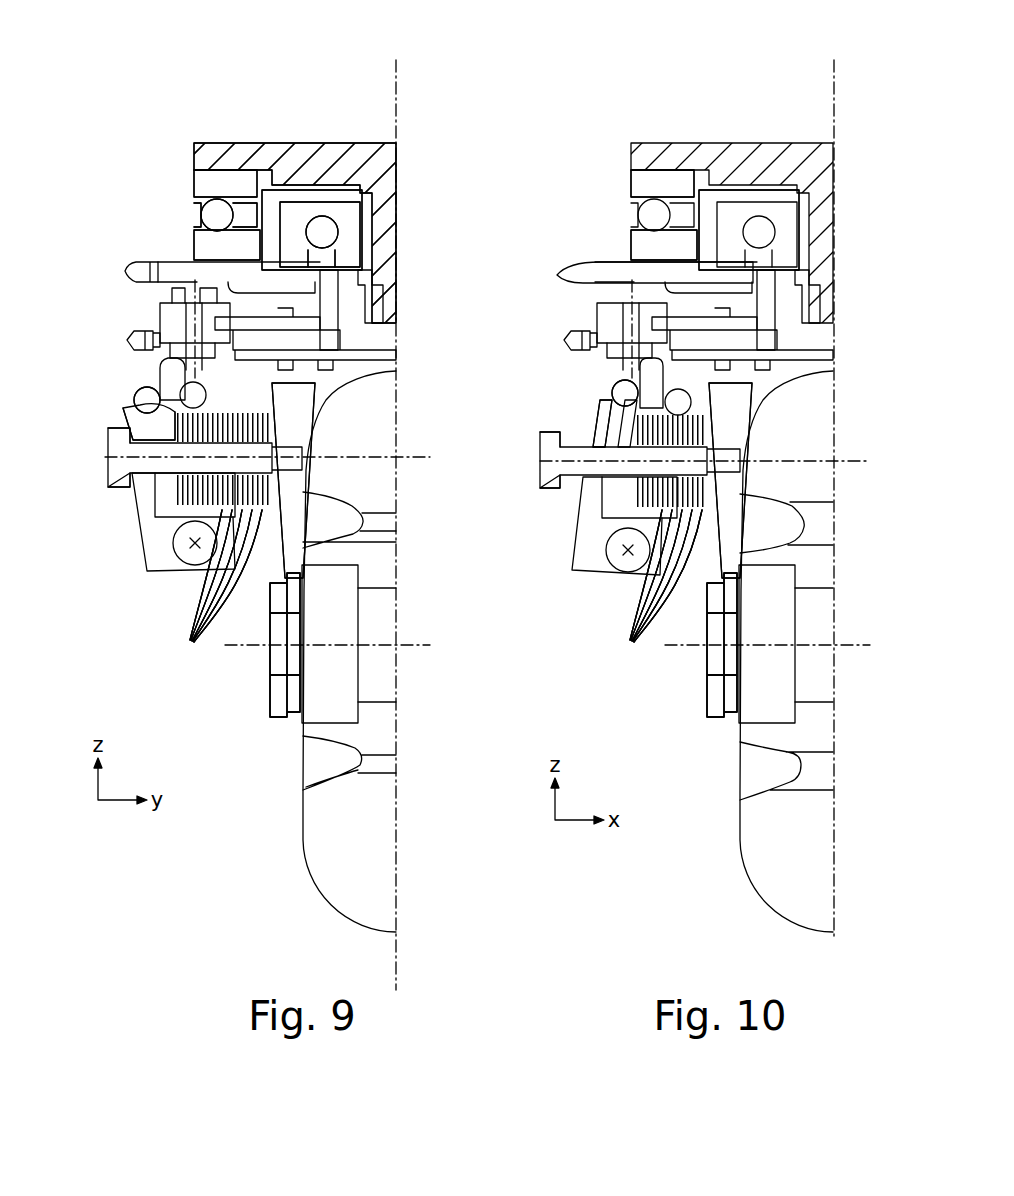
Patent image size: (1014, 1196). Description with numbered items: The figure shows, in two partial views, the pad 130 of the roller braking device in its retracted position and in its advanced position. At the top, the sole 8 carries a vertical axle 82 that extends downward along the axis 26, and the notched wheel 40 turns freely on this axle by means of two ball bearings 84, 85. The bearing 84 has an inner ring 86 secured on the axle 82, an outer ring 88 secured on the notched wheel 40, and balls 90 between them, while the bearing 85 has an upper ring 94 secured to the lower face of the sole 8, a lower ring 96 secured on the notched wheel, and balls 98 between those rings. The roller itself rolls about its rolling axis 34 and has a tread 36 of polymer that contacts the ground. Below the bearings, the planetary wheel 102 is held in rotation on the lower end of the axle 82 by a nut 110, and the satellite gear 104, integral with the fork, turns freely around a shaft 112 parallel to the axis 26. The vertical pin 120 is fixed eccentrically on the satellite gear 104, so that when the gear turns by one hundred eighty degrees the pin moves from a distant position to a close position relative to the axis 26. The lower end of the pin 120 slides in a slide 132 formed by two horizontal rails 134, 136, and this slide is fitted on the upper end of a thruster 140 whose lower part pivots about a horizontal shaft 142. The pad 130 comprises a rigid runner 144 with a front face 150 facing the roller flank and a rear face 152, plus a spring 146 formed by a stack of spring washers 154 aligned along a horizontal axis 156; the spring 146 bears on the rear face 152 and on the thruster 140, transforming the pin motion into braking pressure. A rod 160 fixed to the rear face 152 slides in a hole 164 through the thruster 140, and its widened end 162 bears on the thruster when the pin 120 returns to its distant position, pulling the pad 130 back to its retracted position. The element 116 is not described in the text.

In FIG. 9, the sole 8 is at (361, 138).
In FIG. 9, the axis 26 is at (398, 942).
In FIG. 10, the axis 26 is at (835, 72).
In FIG. 9, the rolling axis 34 is at (407, 645).
In FIG. 10, the rolling axis 34 is at (848, 645).
In FIG. 9, the tread 36 is at (332, 868).
In FIG. 10, the tread 36 is at (772, 868).
In FIG. 9, the notched wheel 40 is at (173, 272).
In FIG. 10, the notched wheel 40 is at (600, 272).
In FIG. 9, the vertical axle 82 is at (382, 205).
In FIG. 9, the ball bearing 84 is at (222, 51).
In FIG. 10, the ball bearing 84 is at (659, 51).
In FIG. 9, the ball bearing 85 is at (103, 125).
In FIG. 10, the ball bearing 85 is at (542, 125).
In FIG. 9, the inner ring 86 is at (348, 210).
In FIG. 10, the inner ring 86 is at (785, 210).
In FIG. 9, the outer ring 88 is at (297, 210).
In FIG. 10, the outer ring 88 is at (734, 210).
In FIG. 9, the balls 90 is at (323, 220).
In FIG. 10, the balls 90 is at (760, 220).
In FIG. 9, the upper ring 94 is at (203, 180).
In FIG. 10, the upper ring 94 is at (640, 180).
In FIG. 9, the lower ring 96 is at (210, 247).
In FIG. 10, the lower ring 96 is at (648, 247).
In FIG. 9, the balls 98 is at (210, 218).
In FIG. 10, the balls 98 is at (648, 218).
In FIG. 9, the planetary wheel 102 is at (332, 333).
In FIG. 10, the planetary wheel 102 is at (770, 333).
In FIG. 9, the satellite gear 104 is at (128, 341).
In FIG. 10, the satellite gear 104 is at (565, 341).
In FIG. 9, the nut 110 is at (376, 306).
In FIG. 10, the nut 110 is at (813, 305).
In FIG. 9, the shaft 112 is at (180, 290).
In FIG. 9, the support 116 is at (322, 382).
In FIG. 10, the support 116 is at (768, 363).
In FIG. 9, the vertical pin 120 is at (172, 379).
In FIG. 10, the vertical pin 120 is at (650, 377).
In FIG. 9, the braking pad 130 is at (233, 711).
In FIG. 10, the braking pad 130 is at (540, 711).
In FIG. 9, the slide 132 is at (58, 383).
In FIG. 10, the slide 132 is at (518, 378).
In FIG. 9, the rail 134 is at (147, 400).
In FIG. 10, the rail 134 is at (625, 393).
In FIG. 9, the rail 136 is at (145, 418).
In FIG. 10, the rail 136 is at (612, 413).
In FIG. 9, the thruster 140 is at (160, 533).
In FIG. 10, the thruster 140 is at (590, 533).
In FIG. 9, the horizontal shaft 142 is at (173, 550).
In FIG. 10, the horizontal shaft 142 is at (610, 553).
In FIG. 9, the rigid runner 144 is at (265, 674).
In FIG. 10, the rigid runner 144 is at (705, 674).
In FIG. 9, the spring 146 is at (102, 674).
In FIG. 10, the spring 146 is at (542, 674).
In FIG. 9, the front face 150 is at (285, 585).
In FIG. 10, the front face 150 is at (722, 585).
In FIG. 9, the rear face 152 is at (258, 560).
In FIG. 10, the rear face 152 is at (695, 560).
In FIG. 9, the spring washers 154 is at (190, 640).
In FIG. 10, the spring washers 154 is at (630, 640).
In FIG. 9, the horizontal axis 156 is at (378, 461).
In FIG. 10, the horizontal axis 156 is at (770, 462).
In FIG. 9, the rod 160 is at (108, 480).
In FIG. 10, the rod 160 is at (540, 470).
In FIG. 9, the widened end 162 is at (108, 452).
In FIG. 10, the widened end 162 is at (560, 490).
In FIG. 9, the hole 164 is at (133, 483).
In FIG. 10, the hole 164 is at (590, 520).